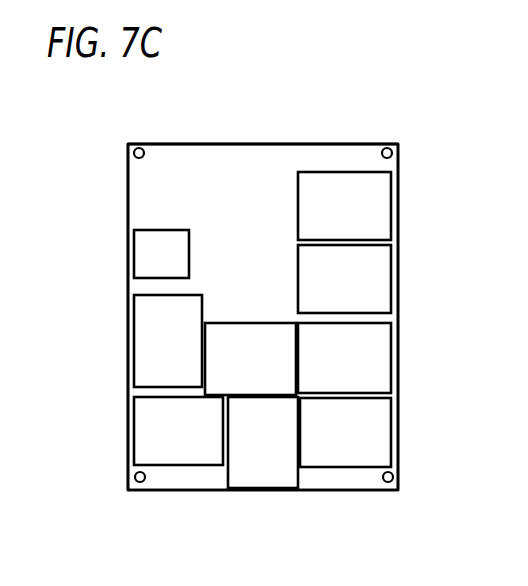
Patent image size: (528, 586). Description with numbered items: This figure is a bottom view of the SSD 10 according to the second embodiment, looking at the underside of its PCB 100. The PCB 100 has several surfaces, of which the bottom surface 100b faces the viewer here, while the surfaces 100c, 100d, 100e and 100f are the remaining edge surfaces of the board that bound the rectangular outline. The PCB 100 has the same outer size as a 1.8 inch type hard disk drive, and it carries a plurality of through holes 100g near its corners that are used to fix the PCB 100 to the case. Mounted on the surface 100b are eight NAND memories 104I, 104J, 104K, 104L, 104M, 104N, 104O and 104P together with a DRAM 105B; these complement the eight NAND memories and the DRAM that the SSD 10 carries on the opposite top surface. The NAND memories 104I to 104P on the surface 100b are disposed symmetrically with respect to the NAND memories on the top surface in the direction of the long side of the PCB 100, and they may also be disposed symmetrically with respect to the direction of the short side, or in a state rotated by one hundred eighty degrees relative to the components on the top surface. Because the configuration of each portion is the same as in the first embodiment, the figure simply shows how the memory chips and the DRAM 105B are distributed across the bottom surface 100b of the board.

The SSD 10 is at (365, 81).
The PCB 100 is at (116, 149).
The surface 100b is at (322, 145).
The surface 100c is at (323, 491).
The surface 100d is at (130, 457).
The surface 100e is at (220, 144).
The surface 100f is at (398, 450).
The through holes 100g is at (139, 147).
The NAND memory 104I is at (385, 193).
The NAND memory 104J is at (385, 277).
The NAND memory 104K is at (385, 352).
The NAND memory 104L is at (385, 415).
The NAND memory 104M is at (256, 487).
The NAND memory 104N is at (140, 433).
The NAND memory 104O is at (140, 325).
The NAND memory 104P is at (213, 377).
The DRAM 105B is at (140, 250).